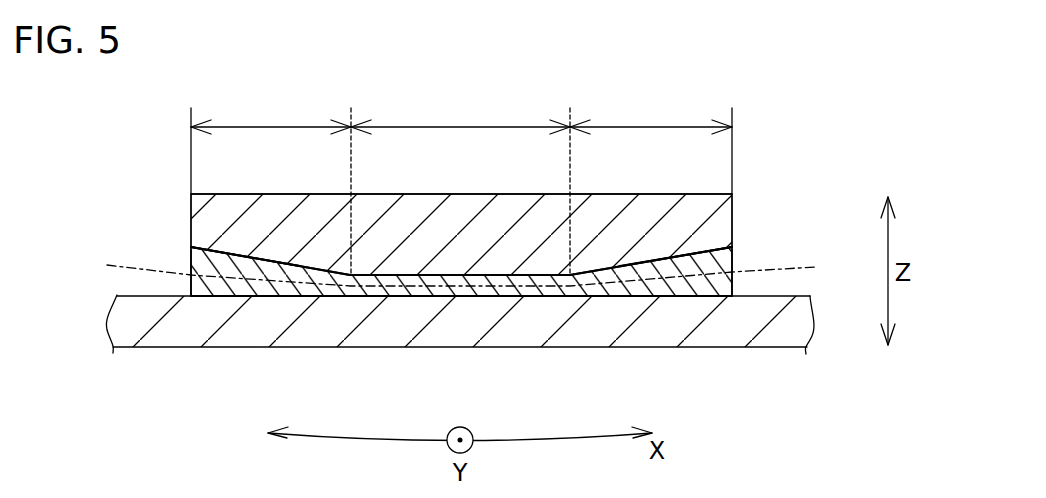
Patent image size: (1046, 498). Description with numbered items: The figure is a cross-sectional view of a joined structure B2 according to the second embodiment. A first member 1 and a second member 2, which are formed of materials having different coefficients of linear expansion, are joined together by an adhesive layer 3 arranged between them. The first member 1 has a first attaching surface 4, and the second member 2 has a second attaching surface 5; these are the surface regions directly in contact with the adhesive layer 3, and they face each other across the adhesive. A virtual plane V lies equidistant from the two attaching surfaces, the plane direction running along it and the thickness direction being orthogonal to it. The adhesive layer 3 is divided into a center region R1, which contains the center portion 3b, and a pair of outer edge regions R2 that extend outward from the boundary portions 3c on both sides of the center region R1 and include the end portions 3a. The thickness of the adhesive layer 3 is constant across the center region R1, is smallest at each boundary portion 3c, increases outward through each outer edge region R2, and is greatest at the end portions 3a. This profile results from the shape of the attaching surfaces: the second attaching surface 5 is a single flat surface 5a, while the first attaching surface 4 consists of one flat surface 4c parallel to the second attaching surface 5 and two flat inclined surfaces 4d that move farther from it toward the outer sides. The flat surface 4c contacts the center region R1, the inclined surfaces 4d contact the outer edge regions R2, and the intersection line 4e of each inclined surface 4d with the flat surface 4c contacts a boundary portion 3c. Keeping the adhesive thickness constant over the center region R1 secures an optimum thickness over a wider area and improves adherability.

The first member 1 is at (200, 193).
The second member 2 is at (171, 348).
The adhesive layer 3 is at (178, 257).
The end portion 3a is at (190, 276).
The center portion 3b is at (450, 292).
The boundary portion 3c is at (342, 292).
The first attaching surface 4 is at (640, 262).
The flat surface 4c is at (492, 277).
The inclined surface 4d is at (268, 263).
The intersection line 4e is at (355, 271).
The second attaching surface 5 is at (688, 263).
The flat surface 5a is at (630, 268).
The joined structure B2 is at (177, 145).
The virtual plane V is at (778, 267).
The center region R1 is at (460, 115).
The outer edge region R2 is at (461, 145).